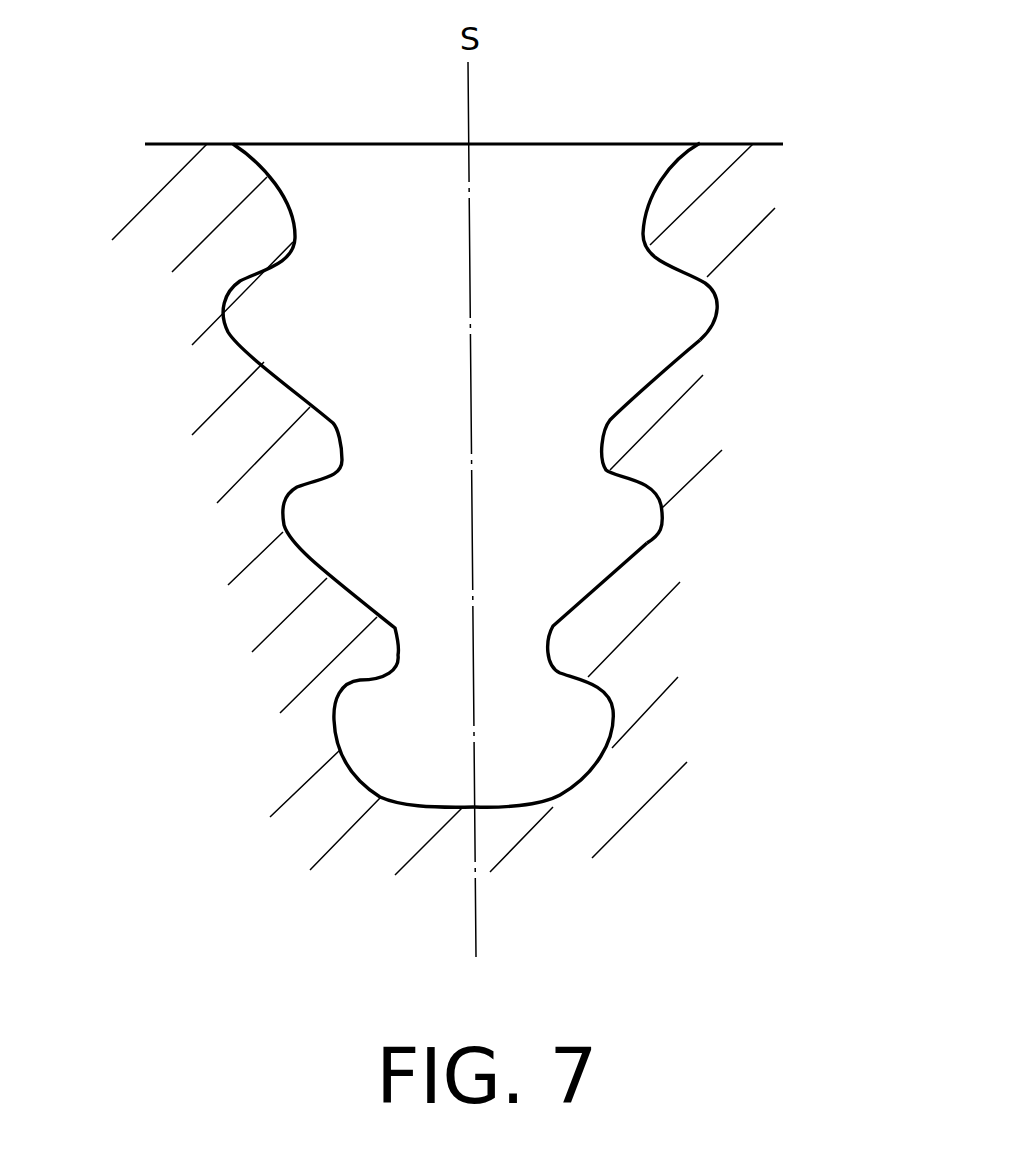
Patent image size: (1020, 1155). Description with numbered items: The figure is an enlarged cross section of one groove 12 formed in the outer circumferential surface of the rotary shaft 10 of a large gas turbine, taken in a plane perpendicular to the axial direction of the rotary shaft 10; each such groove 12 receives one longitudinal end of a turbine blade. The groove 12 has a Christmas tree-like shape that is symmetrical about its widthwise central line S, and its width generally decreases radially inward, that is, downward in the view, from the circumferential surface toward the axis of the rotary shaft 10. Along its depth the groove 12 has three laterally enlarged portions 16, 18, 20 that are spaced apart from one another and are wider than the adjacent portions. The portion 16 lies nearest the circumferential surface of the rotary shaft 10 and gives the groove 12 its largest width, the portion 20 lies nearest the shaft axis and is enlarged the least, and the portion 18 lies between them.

The rotary shaft 10 is at (298, 763).
The groove 12 is at (647, 102).
The laterally enlarged portion 16 is at (713, 300).
The laterally enlarged portion 18 is at (658, 503).
The laterally enlarged portion 20 is at (607, 727).